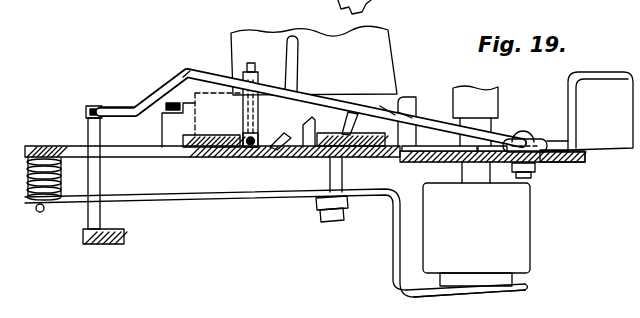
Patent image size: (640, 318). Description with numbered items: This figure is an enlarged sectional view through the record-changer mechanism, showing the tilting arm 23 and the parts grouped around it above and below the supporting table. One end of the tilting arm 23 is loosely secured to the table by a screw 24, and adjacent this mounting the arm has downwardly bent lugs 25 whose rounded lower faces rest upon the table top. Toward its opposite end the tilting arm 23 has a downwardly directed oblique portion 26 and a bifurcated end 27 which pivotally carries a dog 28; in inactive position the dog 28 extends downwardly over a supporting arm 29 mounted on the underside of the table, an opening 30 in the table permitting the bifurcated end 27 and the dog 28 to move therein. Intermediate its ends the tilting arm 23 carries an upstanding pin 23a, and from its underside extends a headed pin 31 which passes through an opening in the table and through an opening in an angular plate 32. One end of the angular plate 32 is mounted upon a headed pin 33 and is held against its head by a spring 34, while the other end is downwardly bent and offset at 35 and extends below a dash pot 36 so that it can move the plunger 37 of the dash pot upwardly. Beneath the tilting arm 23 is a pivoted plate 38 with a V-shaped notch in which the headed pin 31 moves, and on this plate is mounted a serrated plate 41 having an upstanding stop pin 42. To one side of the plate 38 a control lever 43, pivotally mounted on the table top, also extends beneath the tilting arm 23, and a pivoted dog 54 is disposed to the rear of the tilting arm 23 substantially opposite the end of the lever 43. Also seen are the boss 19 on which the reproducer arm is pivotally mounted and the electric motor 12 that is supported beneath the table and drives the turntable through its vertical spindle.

The boss 19 is at (372, 48).
The upstanding pin 23a is at (285, 38).
The control lever 43 is at (200, 155).
The opening 30 is at (163, 148).
The plate 38 is at (285, 156).
The upstanding stop pin 42 is at (318, 113).
The plunger 37 is at (498, 96).
The spring 34 is at (18, 158).
The headed pin 33 is at (50, 210).
The angular plate 32 is at (236, 200).
The headed pin 31 is at (345, 172).
The dog 28 is at (100, 178).
The supporting arm 29 is at (116, 246).
The downwardly directed oblique portion 26 is at (165, 92).
The bifurcated end 27 is at (116, 112).
The pivoted dog 54 is at (212, 70).
The tilting arm 23 is at (388, 112).
The serrated plate 41 is at (402, 113).
The screw 24 is at (525, 130).
The downwardly bent lugs 25 is at (545, 165).
The electric motor 12 is at (585, 159).
The dash pot 36 is at (527, 233).
The downwardly bent and offset end 35 is at (527, 291).